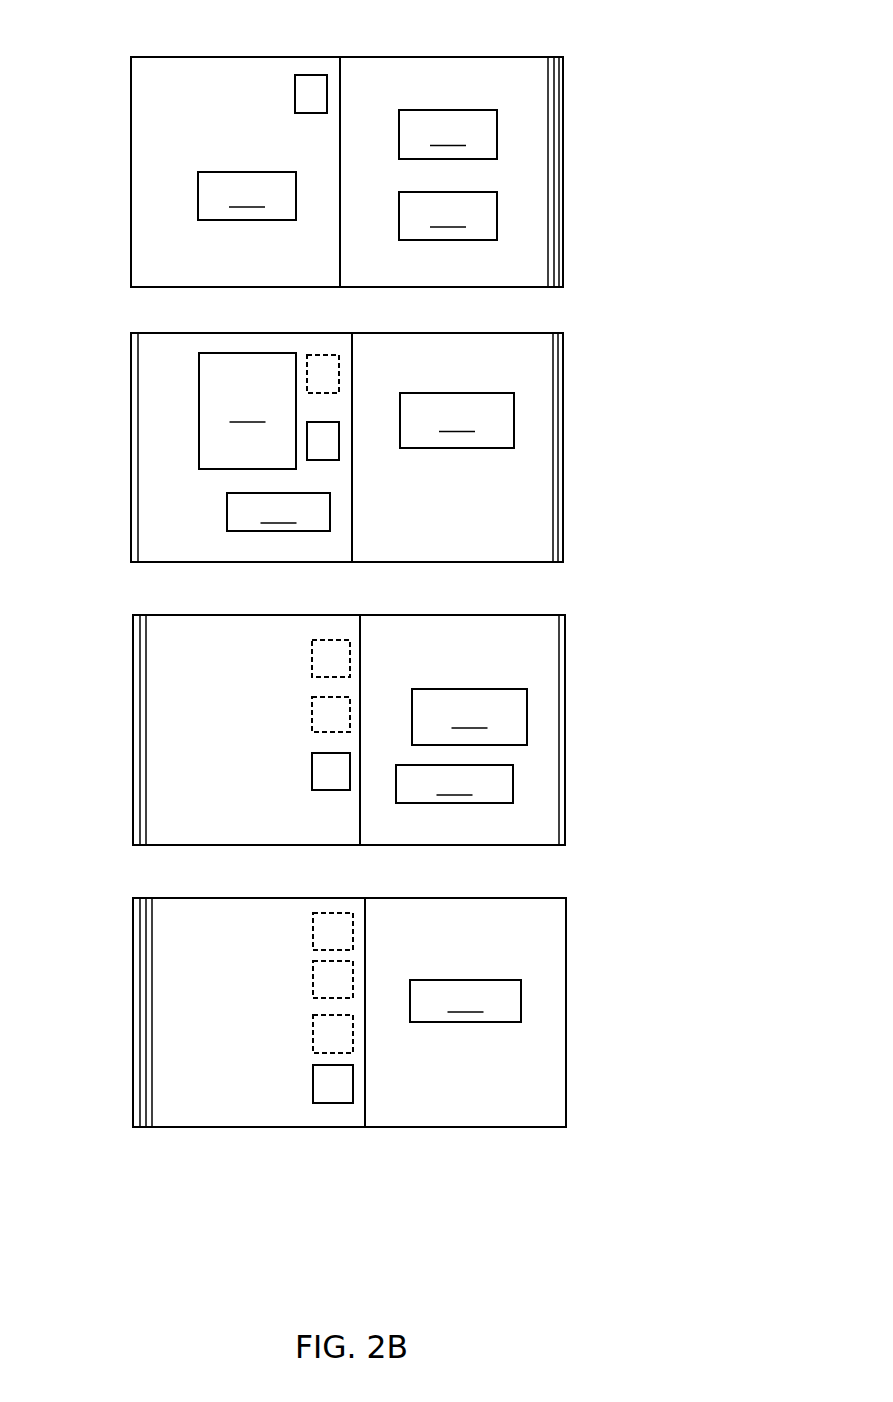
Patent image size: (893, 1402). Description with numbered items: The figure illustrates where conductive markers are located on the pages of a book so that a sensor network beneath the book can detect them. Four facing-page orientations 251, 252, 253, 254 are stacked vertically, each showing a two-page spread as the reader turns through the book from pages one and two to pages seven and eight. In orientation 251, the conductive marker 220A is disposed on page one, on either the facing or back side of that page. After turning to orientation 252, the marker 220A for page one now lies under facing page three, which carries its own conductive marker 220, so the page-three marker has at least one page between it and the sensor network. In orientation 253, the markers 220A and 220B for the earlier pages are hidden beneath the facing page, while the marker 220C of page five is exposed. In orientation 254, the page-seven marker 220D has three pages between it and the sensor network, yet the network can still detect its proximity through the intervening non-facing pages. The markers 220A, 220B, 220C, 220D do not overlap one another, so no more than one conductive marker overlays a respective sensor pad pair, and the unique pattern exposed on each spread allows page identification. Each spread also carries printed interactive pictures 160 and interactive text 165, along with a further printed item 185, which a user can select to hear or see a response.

The page orientation 251 is at (130, 93).
The page orientation 252 is at (128, 412).
The page orientation 253 is at (130, 687).
The page orientation 254 is at (128, 933).
The interactive pictures 160 is at (362, 566).
The interactive text 165 is at (362, 361).
The content item 185 is at (454, 784).
The conductive marker 220 is at (327, 450).
The conductive marker 220A is at (302, 100).
The conductive marker 220B is at (310, 708).
The conductive marker 220C is at (312, 768).
The conductive marker 220D is at (318, 1083).